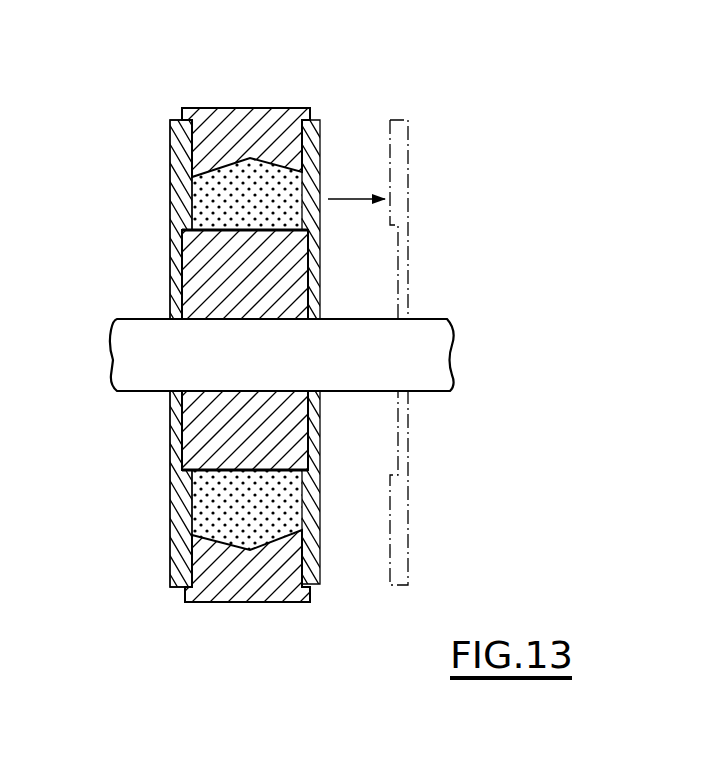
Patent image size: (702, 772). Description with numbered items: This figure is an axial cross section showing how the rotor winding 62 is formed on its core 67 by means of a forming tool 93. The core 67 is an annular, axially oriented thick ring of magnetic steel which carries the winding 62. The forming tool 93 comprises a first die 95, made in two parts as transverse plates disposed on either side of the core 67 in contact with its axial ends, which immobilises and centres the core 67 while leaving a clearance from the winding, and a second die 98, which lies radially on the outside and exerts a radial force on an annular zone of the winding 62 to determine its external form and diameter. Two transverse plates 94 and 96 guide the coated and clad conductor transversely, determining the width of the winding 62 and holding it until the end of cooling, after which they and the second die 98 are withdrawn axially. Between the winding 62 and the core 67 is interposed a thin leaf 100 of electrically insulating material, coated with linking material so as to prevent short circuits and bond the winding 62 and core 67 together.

The winding 62 is at (228, 150).
The core 67 is at (212, 278).
The forming tool 93 is at (160, 113).
The transverse plate 94 is at (170, 143).
The first die 95 is at (164, 577).
The transverse plate 96 is at (395, 150).
The second die 98 is at (282, 573).
The leaf of electrically insulating material 100 is at (260, 470).